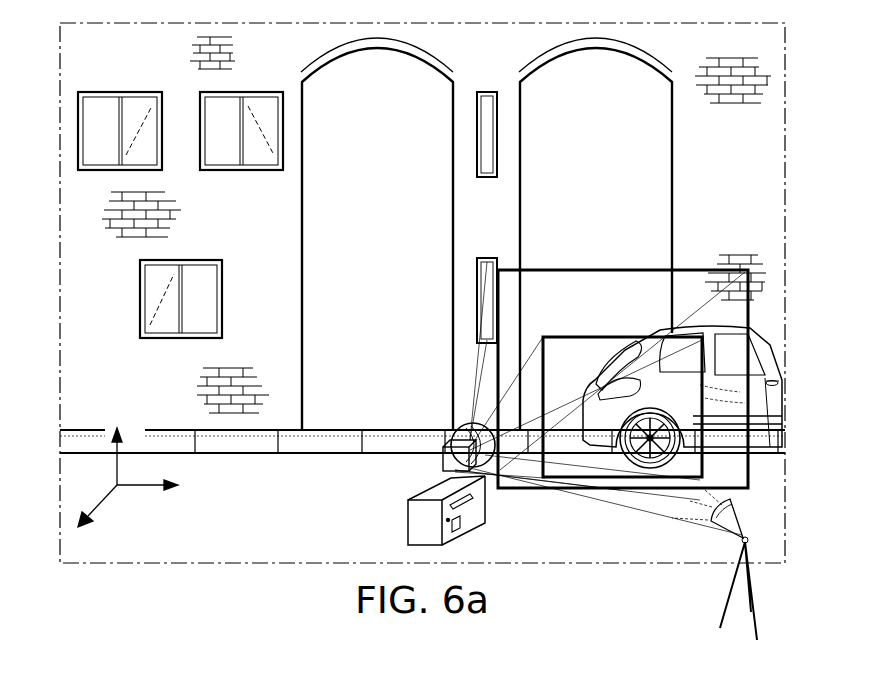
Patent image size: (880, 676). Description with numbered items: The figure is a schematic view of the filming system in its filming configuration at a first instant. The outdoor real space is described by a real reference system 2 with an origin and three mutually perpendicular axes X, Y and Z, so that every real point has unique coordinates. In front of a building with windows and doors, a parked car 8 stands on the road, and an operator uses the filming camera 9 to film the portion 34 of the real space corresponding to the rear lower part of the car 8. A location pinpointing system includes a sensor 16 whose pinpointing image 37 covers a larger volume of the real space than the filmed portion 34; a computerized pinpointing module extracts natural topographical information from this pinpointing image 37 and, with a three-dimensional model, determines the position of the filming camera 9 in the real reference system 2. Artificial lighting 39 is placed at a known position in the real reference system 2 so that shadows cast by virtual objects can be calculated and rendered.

The real reference system 2 is at (117, 485).
The parked car 8 is at (776, 366).
The filming camera 9 is at (470, 523).
The sensor 16 is at (455, 458).
The portion of the real space 34 is at (703, 467).
The pinpointing image 37 is at (749, 310).
The lighting 39 is at (757, 607).